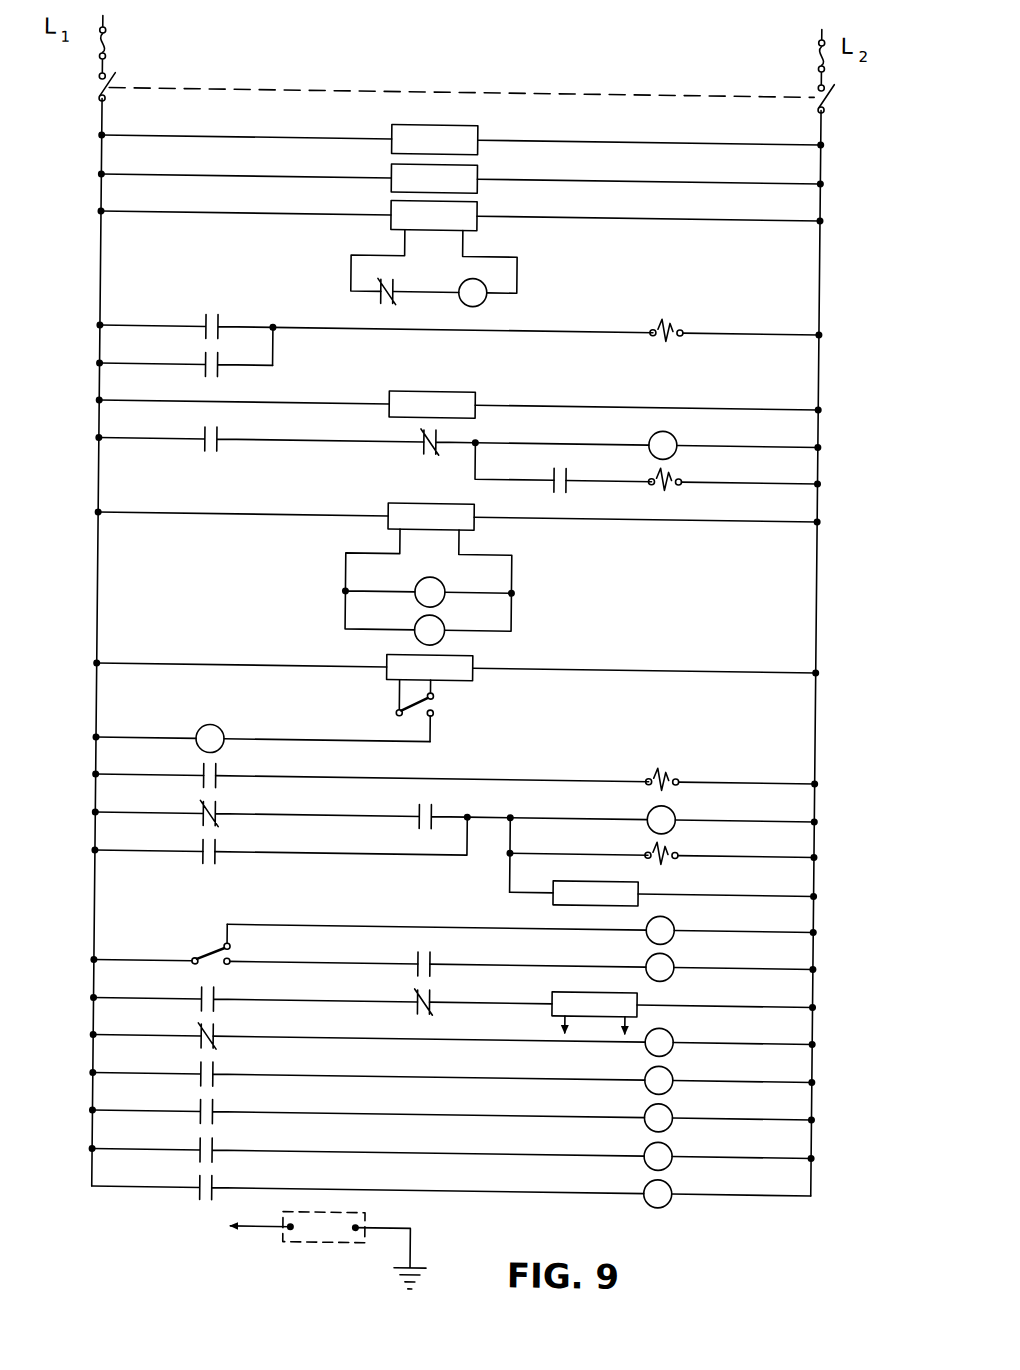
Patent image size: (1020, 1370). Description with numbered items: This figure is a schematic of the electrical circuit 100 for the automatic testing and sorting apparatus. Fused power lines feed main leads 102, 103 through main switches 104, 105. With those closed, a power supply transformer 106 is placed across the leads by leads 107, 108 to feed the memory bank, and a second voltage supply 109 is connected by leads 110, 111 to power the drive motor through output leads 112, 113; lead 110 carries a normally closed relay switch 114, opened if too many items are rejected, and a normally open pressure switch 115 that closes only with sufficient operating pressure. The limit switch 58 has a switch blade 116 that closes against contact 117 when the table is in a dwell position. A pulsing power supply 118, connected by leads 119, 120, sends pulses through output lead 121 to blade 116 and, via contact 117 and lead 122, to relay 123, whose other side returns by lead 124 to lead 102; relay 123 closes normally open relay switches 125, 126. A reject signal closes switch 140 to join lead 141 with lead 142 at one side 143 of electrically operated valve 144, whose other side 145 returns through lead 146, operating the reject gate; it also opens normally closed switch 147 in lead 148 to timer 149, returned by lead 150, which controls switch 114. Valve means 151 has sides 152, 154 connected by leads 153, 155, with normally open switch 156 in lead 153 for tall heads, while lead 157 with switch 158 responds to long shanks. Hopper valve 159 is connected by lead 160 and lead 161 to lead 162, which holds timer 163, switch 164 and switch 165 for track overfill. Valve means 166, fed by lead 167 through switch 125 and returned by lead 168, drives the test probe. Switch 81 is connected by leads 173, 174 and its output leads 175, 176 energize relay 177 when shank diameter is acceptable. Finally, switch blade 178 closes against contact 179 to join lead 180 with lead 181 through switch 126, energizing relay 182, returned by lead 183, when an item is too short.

The limit switch 58 is at (374, 714).
The limit switch 81 is at (427, 495).
The electrical circuit 100 is at (500, 171).
The main lead 102 is at (61, 641).
The main lead 103 is at (851, 654).
The main switch 104 is at (73, 88).
The main switch 105 is at (854, 109).
The power supply transformer 106 is at (459, 125).
The lead 107 is at (247, 115).
The lead 108 is at (649, 127).
The second voltage supply device 109 is at (637, 994).
The lead 110 is at (491, 989).
The lead 111 is at (725, 989).
The output lead 112 is at (512, 1023).
The output lead 113 is at (668, 1022).
The normally closed relay operated switch 114 is at (385, 994).
The normally open pressure operated electrical switch 115 is at (255, 992).
The switch blade 116 is at (470, 694).
The contact 117 is at (463, 729).
The pulsing power supply means 118 is at (468, 658).
The lead 119 is at (242, 641).
The lead 120 is at (644, 647).
The output lead 121 is at (355, 693).
The lead 122 is at (327, 755).
The relay 123 is at (232, 724).
The lead 124 is at (146, 710).
The normally open relay switch 125 is at (166, 766).
The normally open relay switch 126 is at (467, 953).
The switch 140 is at (247, 842).
The lead 141 is at (281, 854).
The lead 142 is at (528, 839).
The side of valve 143 is at (605, 841).
The electrically operated valve 144 is at (697, 844).
The side of valve 145 is at (616, 872).
The lead 146 is at (746, 875).
The normally closed electrical switch 147 is at (197, 1027).
The lead 148 is at (429, 1055).
The timer 149 is at (689, 1051).
The lead 150 is at (742, 1027).
The electrically operated valve means 151 is at (695, 310).
The side of valve means 152 is at (632, 307).
The lead 153 is at (462, 353).
The side of valve means 154 is at (711, 321).
The lead 155 is at (750, 362).
The normally open switch 156 is at (196, 308).
The lead 157 is at (283, 361).
The normally open switch 158 is at (185, 355).
The electrically operated valve means 159 is at (690, 490).
The lead 160 is at (749, 469).
The lead 161 is at (563, 477).
The lead 162 is at (562, 433).
The timer 163 is at (733, 440).
The normally open switch 164 is at (527, 470).
The normally open switch 165 is at (261, 431).
The electrically operated valve means 166 is at (684, 754).
The lead 167 is at (372, 752).
The lead 168 is at (747, 756).
The lead 173 is at (243, 492).
The lead 174 is at (645, 545).
The output lead 175 is at (349, 578).
The output lead 176 is at (499, 579).
The relay 177 is at (456, 611).
The switch blade 178 is at (195, 930).
The contact 179 is at (324, 946).
The lead 180 is at (143, 941).
The lead 181 is at (497, 948).
The relay 182 is at (625, 957).
The lead 183 is at (743, 951).